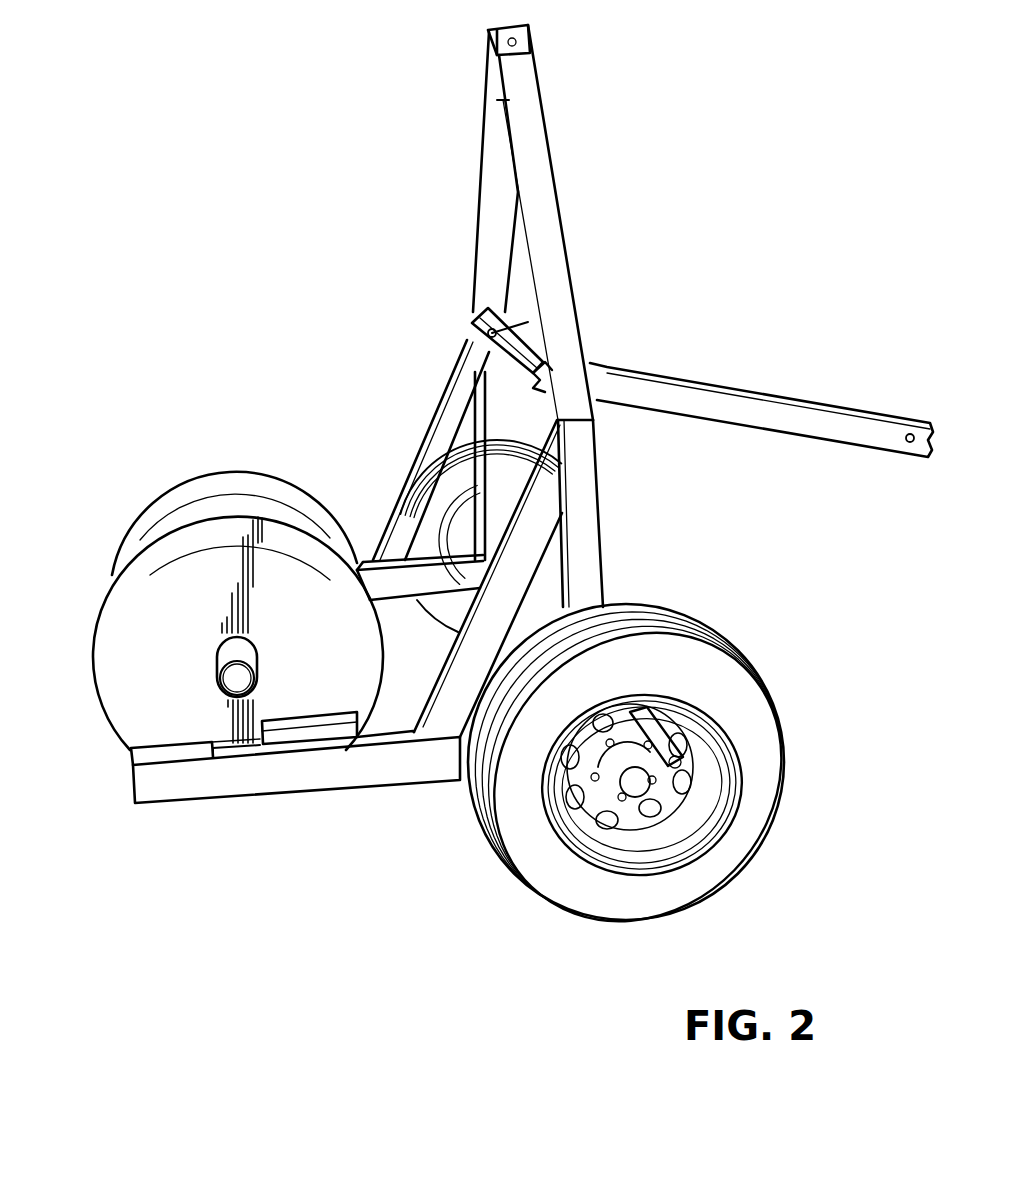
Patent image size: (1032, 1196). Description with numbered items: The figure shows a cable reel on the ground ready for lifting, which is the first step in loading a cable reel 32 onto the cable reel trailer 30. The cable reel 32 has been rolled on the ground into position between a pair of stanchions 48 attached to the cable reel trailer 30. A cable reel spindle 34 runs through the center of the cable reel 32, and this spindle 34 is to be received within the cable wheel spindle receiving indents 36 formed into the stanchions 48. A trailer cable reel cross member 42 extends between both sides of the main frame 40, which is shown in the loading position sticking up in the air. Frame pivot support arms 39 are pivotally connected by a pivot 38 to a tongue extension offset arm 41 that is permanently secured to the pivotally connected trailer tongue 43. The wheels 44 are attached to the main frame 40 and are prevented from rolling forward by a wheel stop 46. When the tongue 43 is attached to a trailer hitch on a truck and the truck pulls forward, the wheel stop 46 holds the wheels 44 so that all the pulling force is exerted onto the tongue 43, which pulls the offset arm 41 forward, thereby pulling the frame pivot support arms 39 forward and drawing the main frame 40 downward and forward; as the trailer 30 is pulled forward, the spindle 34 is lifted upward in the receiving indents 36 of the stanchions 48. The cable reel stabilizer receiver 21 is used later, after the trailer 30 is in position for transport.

The cable reel stabilizer receiver 21 is at (290, 737).
The cable reel trailer 30 is at (726, 209).
The cable reel 32 is at (112, 613).
The cable reel spindle 34 is at (230, 687).
The cable wheel spindle receiving indent 36 is at (225, 751).
The pivot 38 is at (527, 332).
The frame pivot support arm 39 is at (503, 347).
The main frame 40 is at (522, 72).
The tongue extension offset arm 41 is at (528, 322).
The trailer cable reel cross member 42 is at (537, 387).
The trailer tongue 43 is at (773, 422).
The wheel 44 is at (773, 798).
The wheel stop 46 is at (667, 743).
The stanchion 48 is at (317, 778).